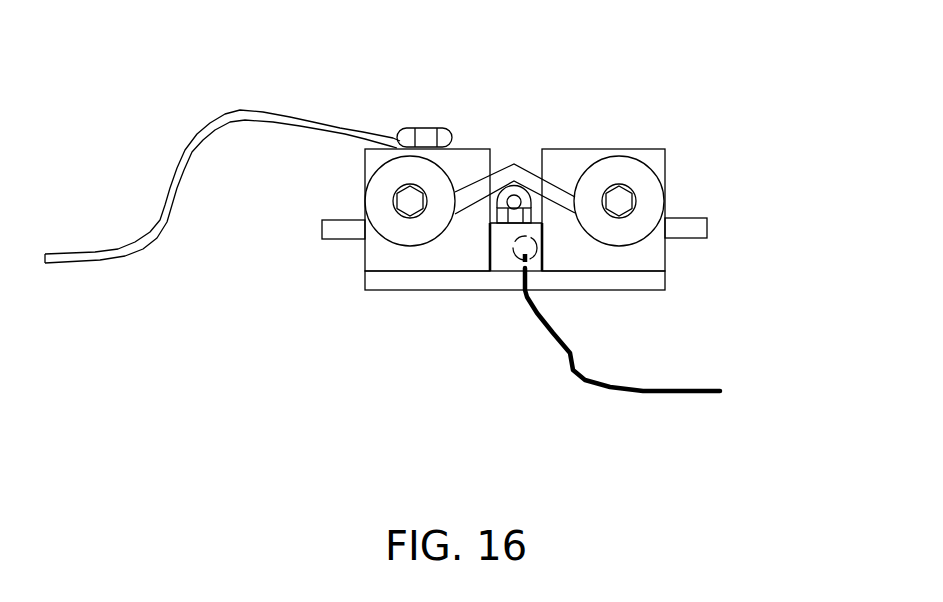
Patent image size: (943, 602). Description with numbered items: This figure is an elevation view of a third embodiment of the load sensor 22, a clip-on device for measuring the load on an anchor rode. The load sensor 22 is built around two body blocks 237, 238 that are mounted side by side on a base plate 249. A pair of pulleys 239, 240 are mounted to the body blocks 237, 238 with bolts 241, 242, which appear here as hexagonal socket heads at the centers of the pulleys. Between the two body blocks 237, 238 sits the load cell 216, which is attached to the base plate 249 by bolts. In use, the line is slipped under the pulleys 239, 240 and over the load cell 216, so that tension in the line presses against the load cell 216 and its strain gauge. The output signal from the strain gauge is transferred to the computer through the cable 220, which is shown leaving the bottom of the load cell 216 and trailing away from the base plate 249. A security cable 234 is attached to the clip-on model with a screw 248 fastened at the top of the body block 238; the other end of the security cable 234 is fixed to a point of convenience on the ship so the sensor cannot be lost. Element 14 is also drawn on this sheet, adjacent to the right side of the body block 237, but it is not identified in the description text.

The load sensor 22 is at (366, 407).
The security cable 234 is at (203, 125).
The screw 248 is at (412, 126).
The body block 238 is at (468, 165).
The body block 237 is at (568, 160).
The base plate 249 is at (405, 280).
The frame tab 14 is at (698, 225).
The pulley 240 is at (408, 235).
The bolt 242 is at (402, 200).
The pulley 239 is at (633, 178).
The bolt 241 is at (623, 205).
The load cell 216 is at (510, 260).
The cable 220 is at (623, 385).